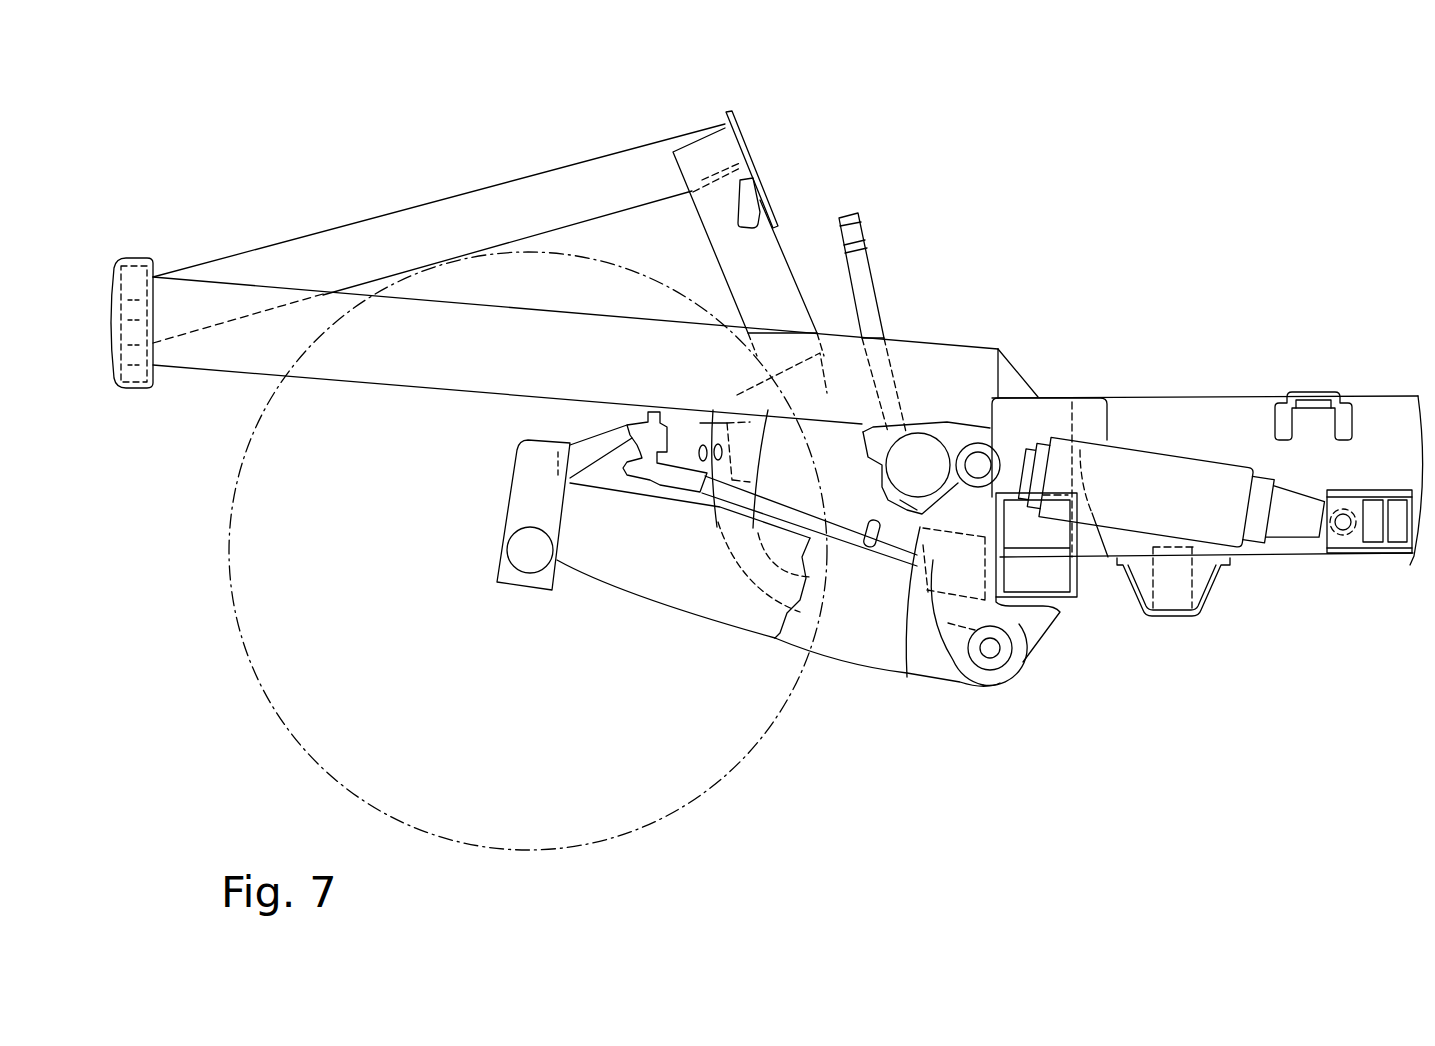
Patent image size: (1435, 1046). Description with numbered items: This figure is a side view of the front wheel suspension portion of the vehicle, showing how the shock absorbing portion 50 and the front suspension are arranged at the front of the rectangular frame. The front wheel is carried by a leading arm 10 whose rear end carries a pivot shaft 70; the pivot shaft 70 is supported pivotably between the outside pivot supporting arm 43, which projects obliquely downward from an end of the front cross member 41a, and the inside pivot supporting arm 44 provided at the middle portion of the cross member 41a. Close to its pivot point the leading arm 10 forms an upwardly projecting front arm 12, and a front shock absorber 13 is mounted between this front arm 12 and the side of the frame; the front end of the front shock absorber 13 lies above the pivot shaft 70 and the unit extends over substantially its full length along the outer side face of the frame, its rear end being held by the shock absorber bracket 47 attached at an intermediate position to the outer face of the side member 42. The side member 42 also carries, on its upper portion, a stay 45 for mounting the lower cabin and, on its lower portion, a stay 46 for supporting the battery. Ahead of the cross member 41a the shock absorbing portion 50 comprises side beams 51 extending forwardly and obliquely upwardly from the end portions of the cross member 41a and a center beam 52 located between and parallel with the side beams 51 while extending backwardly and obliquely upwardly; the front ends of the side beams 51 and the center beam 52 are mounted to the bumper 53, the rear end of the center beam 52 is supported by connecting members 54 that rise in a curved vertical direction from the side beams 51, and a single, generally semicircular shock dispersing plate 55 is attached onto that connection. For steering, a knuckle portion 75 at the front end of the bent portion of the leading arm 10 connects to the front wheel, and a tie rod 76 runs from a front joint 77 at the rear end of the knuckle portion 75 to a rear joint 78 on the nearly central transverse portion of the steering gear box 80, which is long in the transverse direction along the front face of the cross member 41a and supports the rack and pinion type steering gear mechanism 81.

The leading arm 10 is at (660, 590).
The front arm 12 is at (907, 677).
The front shock absorber 13 is at (1155, 453).
The front cross member 41a is at (1027, 402).
The side member 42 is at (1215, 405).
The pivot supporting arm 43 is at (1062, 607).
The pivot supporting arm 44 is at (767, 430).
The stay 45 is at (1312, 395).
The stay 46 is at (1222, 588).
The shock absorber bracket 47 is at (1373, 525).
The shock absorbing portion 50 is at (258, 185).
The side beam 51 is at (205, 368).
The center beam 52 is at (357, 221).
The bumper 53 is at (142, 258).
The connecting member 54 is at (729, 263).
The shock dispersing plate 55 is at (736, 127).
The pivot shaft 70 is at (1000, 672).
The knuckle portion 75 is at (522, 514).
The tie rod 76 is at (778, 508).
The front joint 77 is at (640, 455).
The rear joint 78 is at (900, 545).
The steering gear box 80 is at (882, 491).
The steering gear mechanism 81 is at (915, 432).